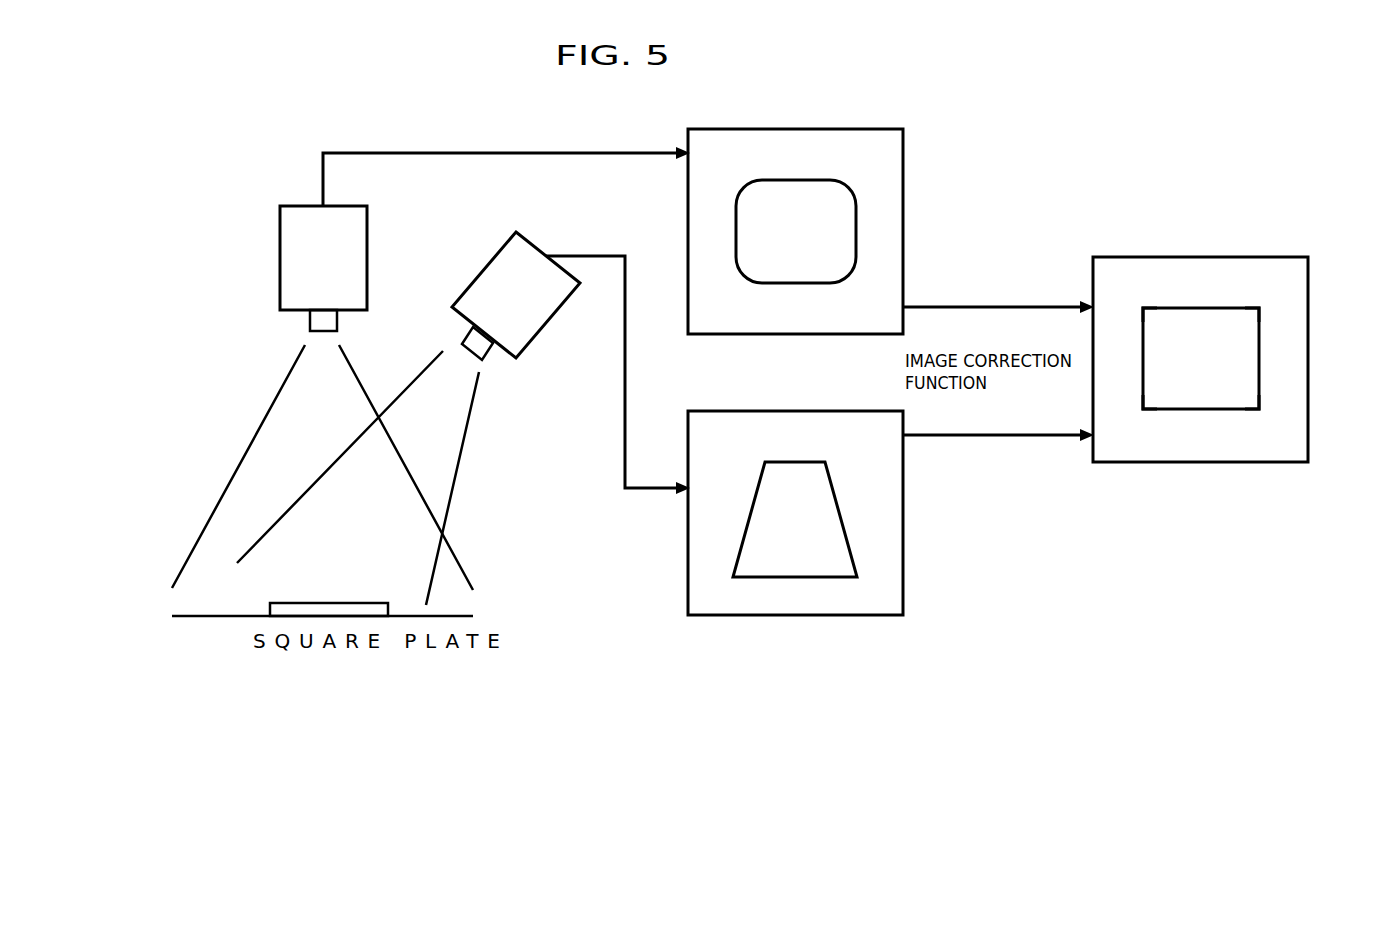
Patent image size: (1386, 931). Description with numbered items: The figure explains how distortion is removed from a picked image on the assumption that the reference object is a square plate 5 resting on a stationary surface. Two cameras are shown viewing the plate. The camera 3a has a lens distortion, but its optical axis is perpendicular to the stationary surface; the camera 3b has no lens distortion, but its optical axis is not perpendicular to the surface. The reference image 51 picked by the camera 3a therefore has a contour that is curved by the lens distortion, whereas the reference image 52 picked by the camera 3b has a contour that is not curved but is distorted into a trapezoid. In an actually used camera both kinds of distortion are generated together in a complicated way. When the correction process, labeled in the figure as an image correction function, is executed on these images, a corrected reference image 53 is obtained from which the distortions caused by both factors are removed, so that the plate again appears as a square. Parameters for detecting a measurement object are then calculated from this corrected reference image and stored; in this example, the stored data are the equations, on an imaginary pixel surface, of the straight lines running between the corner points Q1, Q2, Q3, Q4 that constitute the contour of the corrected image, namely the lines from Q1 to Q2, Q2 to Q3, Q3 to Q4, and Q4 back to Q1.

The camera 3a is at (280, 251).
The camera 3b is at (554, 317).
The square plate 5 is at (288, 602).
The reference image 51 is at (856, 207).
The reference image 52 is at (850, 544).
The corrected reference image 53 is at (1210, 410).
The contour point Q1 is at (1143, 409).
The contour point Q2 is at (1259, 409).
The contour point Q3 is at (1259, 308).
The contour point Q4 is at (1143, 308).